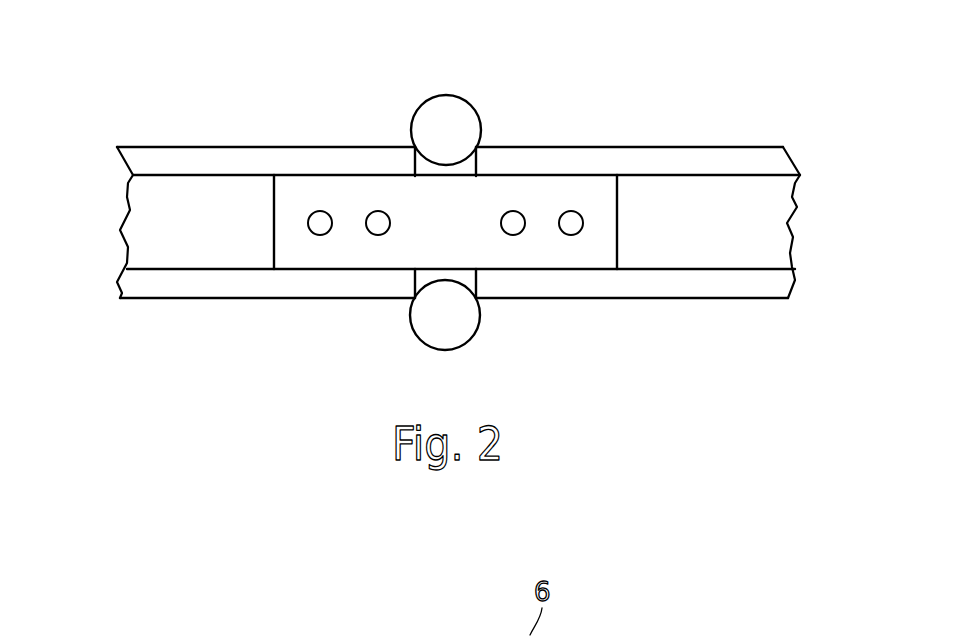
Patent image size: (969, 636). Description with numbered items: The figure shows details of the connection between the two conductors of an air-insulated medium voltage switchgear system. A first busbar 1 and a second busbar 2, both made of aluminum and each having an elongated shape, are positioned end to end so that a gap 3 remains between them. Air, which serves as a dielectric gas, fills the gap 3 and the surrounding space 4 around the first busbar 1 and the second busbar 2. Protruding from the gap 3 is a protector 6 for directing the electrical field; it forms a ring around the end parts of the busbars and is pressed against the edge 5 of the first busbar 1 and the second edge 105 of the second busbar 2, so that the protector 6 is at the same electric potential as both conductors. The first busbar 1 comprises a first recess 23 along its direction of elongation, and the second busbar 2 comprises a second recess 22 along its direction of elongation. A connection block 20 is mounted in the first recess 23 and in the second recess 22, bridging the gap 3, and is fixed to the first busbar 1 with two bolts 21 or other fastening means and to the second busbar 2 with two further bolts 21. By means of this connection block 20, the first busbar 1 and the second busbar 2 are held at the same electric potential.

The first busbar 1 is at (225, 157).
The second busbar 2 is at (692, 158).
The gap 3 is at (463, 281).
The space 4 is at (270, 113).
The edge 5 is at (415, 147).
The second edge 105 is at (477, 147).
The protector 6 is at (480, 335).
The connection block 20 is at (330, 230).
The bolts 21 is at (323, 248).
The second recess 22 is at (752, 220).
The first recess 23 is at (165, 219).